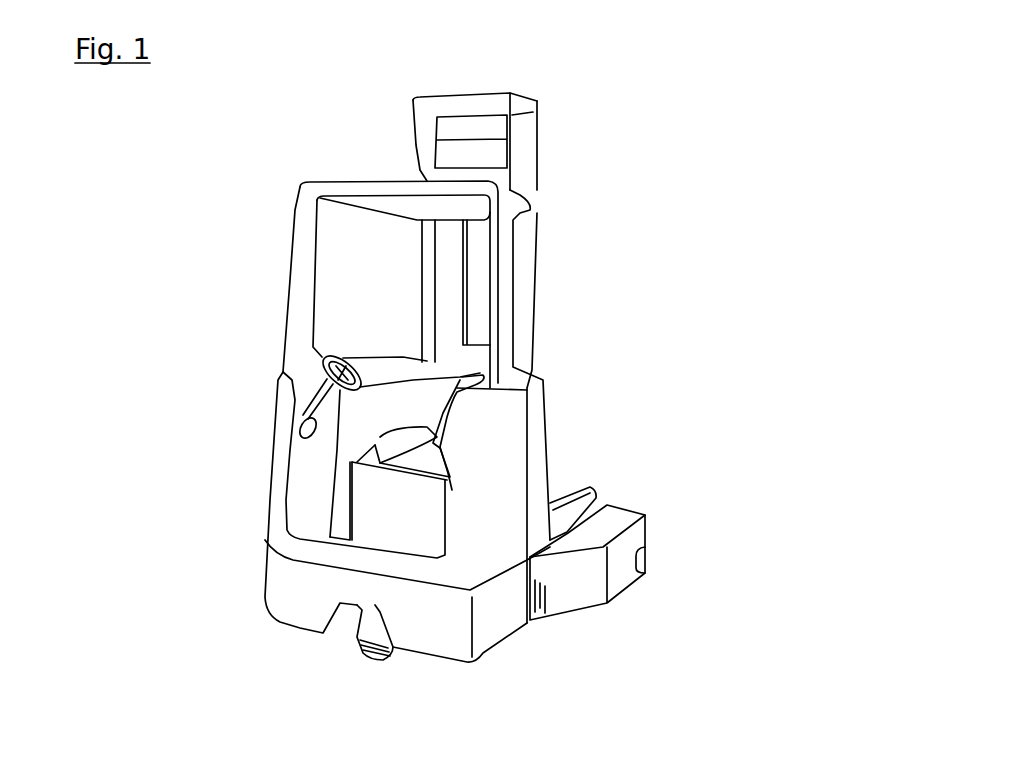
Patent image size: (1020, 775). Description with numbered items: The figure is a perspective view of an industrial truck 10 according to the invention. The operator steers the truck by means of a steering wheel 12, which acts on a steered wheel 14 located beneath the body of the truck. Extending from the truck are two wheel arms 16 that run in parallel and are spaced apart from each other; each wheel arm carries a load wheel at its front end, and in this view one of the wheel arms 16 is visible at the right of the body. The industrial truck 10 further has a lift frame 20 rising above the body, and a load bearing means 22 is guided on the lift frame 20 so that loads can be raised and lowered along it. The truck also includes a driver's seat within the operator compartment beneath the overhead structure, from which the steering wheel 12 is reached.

The industrial truck 10 is at (760, 223).
The steering wheel 12 is at (338, 351).
The steered wheel 14 is at (376, 661).
The wheel arm 16 is at (633, 535).
The lift frame 20 is at (522, 147).
The load bearing means 22 is at (573, 497).